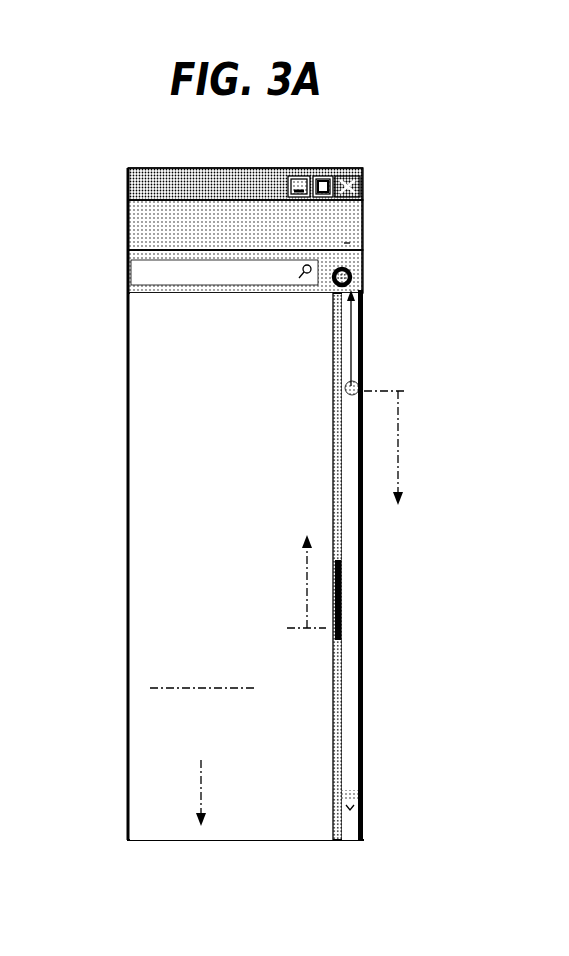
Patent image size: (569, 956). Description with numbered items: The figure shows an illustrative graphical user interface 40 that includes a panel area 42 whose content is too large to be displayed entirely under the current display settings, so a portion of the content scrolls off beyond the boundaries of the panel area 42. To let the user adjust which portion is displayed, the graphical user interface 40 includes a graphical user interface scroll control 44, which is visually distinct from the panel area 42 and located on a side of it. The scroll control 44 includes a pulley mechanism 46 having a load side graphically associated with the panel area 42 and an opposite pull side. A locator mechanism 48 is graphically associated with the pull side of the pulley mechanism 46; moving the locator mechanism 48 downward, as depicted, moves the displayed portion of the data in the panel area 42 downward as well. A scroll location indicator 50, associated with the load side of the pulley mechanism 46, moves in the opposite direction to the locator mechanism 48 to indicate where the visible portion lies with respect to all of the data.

The graphical user interface 40 is at (96, 190).
The panel area 42 is at (238, 459).
The graphical user interface scroll control 44 is at (406, 277).
The pulley mechanism 46 is at (352, 276).
The locator mechanism 48 is at (358, 390).
The scroll location indicator 50 is at (342, 592).